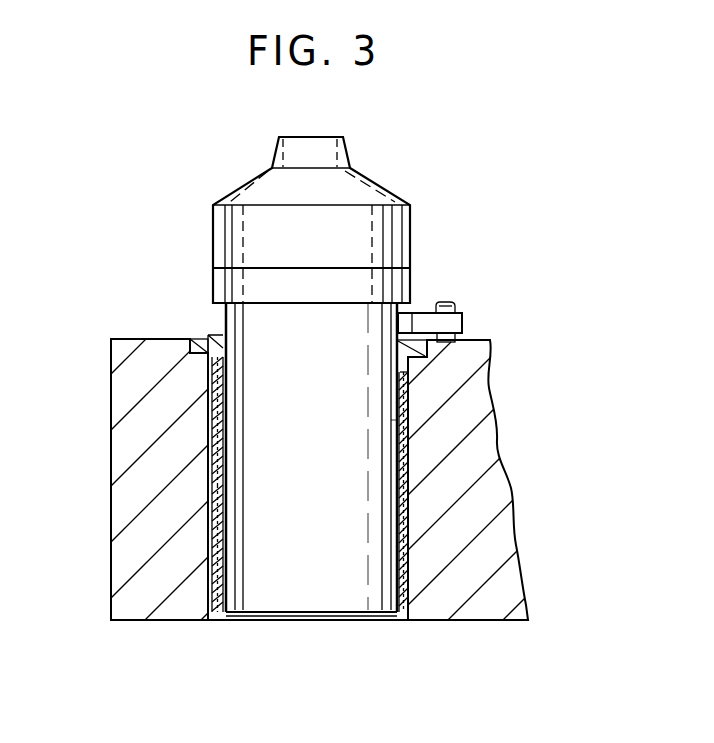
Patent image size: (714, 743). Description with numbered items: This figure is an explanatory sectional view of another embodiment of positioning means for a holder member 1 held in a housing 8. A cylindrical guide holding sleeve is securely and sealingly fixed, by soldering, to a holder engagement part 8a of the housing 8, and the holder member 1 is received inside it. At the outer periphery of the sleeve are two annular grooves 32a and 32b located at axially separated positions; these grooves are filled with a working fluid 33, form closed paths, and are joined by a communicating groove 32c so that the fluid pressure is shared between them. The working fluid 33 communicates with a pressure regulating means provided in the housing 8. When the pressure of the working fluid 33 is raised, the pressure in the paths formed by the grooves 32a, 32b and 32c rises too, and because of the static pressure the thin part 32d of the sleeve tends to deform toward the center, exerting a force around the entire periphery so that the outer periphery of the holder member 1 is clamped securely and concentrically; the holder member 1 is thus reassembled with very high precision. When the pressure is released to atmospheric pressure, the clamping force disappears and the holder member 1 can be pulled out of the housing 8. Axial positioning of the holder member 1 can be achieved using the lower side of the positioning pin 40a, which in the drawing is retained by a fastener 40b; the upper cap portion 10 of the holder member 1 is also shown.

The holder member 1 is at (340, 590).
The housing 8 is at (493, 622).
The holder engagement part 8a is at (400, 622).
The cap 10 is at (390, 194).
The annular groove 32a is at (220, 408).
The annular groove 32b is at (220, 555).
The communicating groove 32c is at (408, 472).
The thin part 32d is at (397, 428).
The working fluid 33 is at (405, 413).
The positioning pin 40a is at (462, 322).
The bolt 40b is at (443, 303).